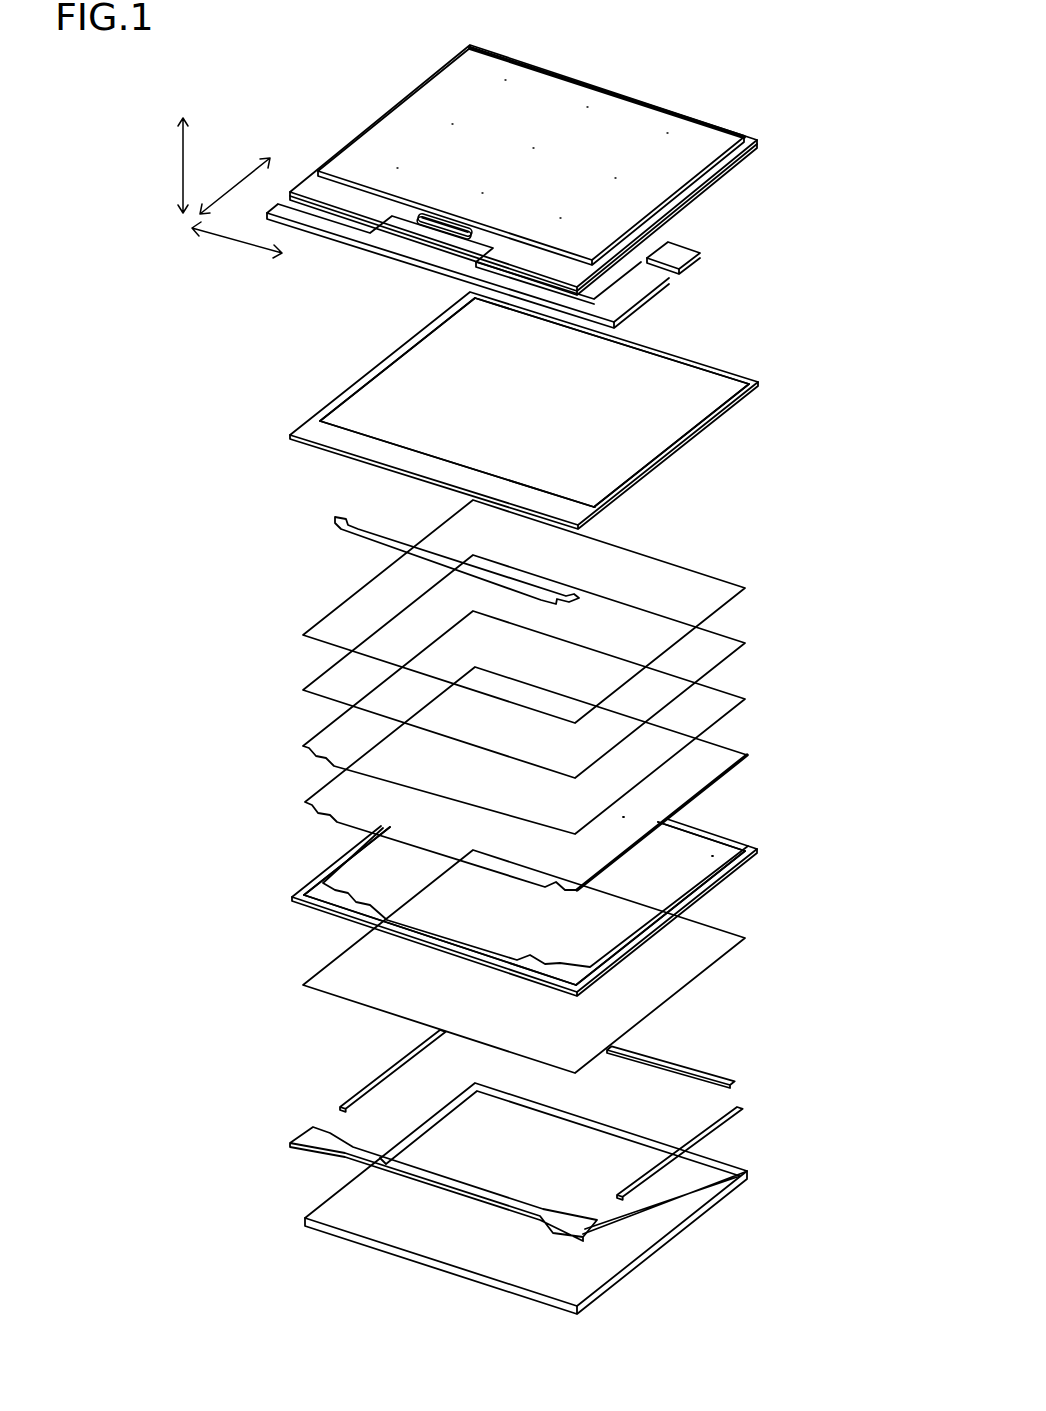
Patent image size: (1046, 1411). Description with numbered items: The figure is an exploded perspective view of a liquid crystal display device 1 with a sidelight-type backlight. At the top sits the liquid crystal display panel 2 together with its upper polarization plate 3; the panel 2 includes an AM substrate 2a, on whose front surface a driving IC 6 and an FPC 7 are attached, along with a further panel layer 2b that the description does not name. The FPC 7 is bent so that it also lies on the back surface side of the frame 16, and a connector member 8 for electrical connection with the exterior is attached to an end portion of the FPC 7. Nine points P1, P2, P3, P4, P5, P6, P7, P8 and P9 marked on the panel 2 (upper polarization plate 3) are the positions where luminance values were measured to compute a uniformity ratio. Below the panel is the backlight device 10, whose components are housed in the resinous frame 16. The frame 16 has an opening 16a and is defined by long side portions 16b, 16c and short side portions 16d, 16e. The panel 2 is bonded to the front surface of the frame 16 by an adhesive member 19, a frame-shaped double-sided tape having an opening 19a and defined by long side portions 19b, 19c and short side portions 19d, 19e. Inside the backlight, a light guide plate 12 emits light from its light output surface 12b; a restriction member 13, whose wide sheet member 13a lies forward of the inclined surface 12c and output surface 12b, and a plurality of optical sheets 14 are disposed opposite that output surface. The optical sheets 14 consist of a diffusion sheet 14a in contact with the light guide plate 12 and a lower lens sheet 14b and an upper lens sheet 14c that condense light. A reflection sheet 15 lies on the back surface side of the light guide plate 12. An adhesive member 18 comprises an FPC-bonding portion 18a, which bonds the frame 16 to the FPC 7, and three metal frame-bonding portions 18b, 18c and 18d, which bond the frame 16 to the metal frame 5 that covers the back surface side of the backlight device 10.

The liquid crystal display device 1 is at (781, 49).
The liquid crystal display panel 2 is at (561, 170).
The AM substrate 2a is at (738, 164).
The upper layer of touch sensor 2b is at (741, 153).
The upper polarization plate 3 is at (712, 138).
The metal frame 5 is at (721, 1185).
The driving IC 6 is at (417, 223).
The FPC 7 is at (440, 257).
The connector member 8 is at (700, 259).
The backlight device 10 is at (884, 368).
The light guide plate 12 is at (584, 817).
The light output surface 12b is at (623, 817).
The inclined surface 12c is at (427, 837).
The restriction member 13 is at (606, 557).
The wide sheet member 13a is at (500, 577).
The optical sheets 14 is at (583, 667).
The diffusion sheet 14a is at (561, 722).
The lower lens sheet 14b is at (749, 645).
The upper lens sheet 14c is at (749, 590).
The reflection sheet 15 is at (721, 942).
The frame 16 is at (566, 890).
The opening 16a is at (712, 856).
The long side portion 16b is at (440, 944).
The long side portion 16c is at (710, 830).
The short side portion 16d is at (706, 903).
The short side portion 16e is at (342, 860).
The adhesive member 18 is at (551, 1132).
The FPC-bonding portion 18a is at (447, 1190).
The metal frame-bonding portion 18b is at (731, 1116).
The metal frame-bonding portion 18c is at (677, 1070).
The metal frame-bonding portion 18d is at (372, 1085).
The adhesive member 19 is at (577, 410).
The opening 19a is at (695, 416).
The long side portion 19b is at (371, 452).
The long side portion 19c is at (695, 364).
The short side portion 19d is at (650, 470).
The short side portion 19e is at (383, 362).
The measurement point P1 is at (402, 161).
The measurement point P2 is at (456, 117).
The measurement point P3 is at (509, 73).
The measurement point P4 is at (486, 186).
The measurement point P5 is at (537, 141).
The measurement point P6 is at (591, 100).
The measurement point P7 is at (564, 211).
The measurement point P8 is at (619, 171).
The measurement point P9 is at (671, 126).